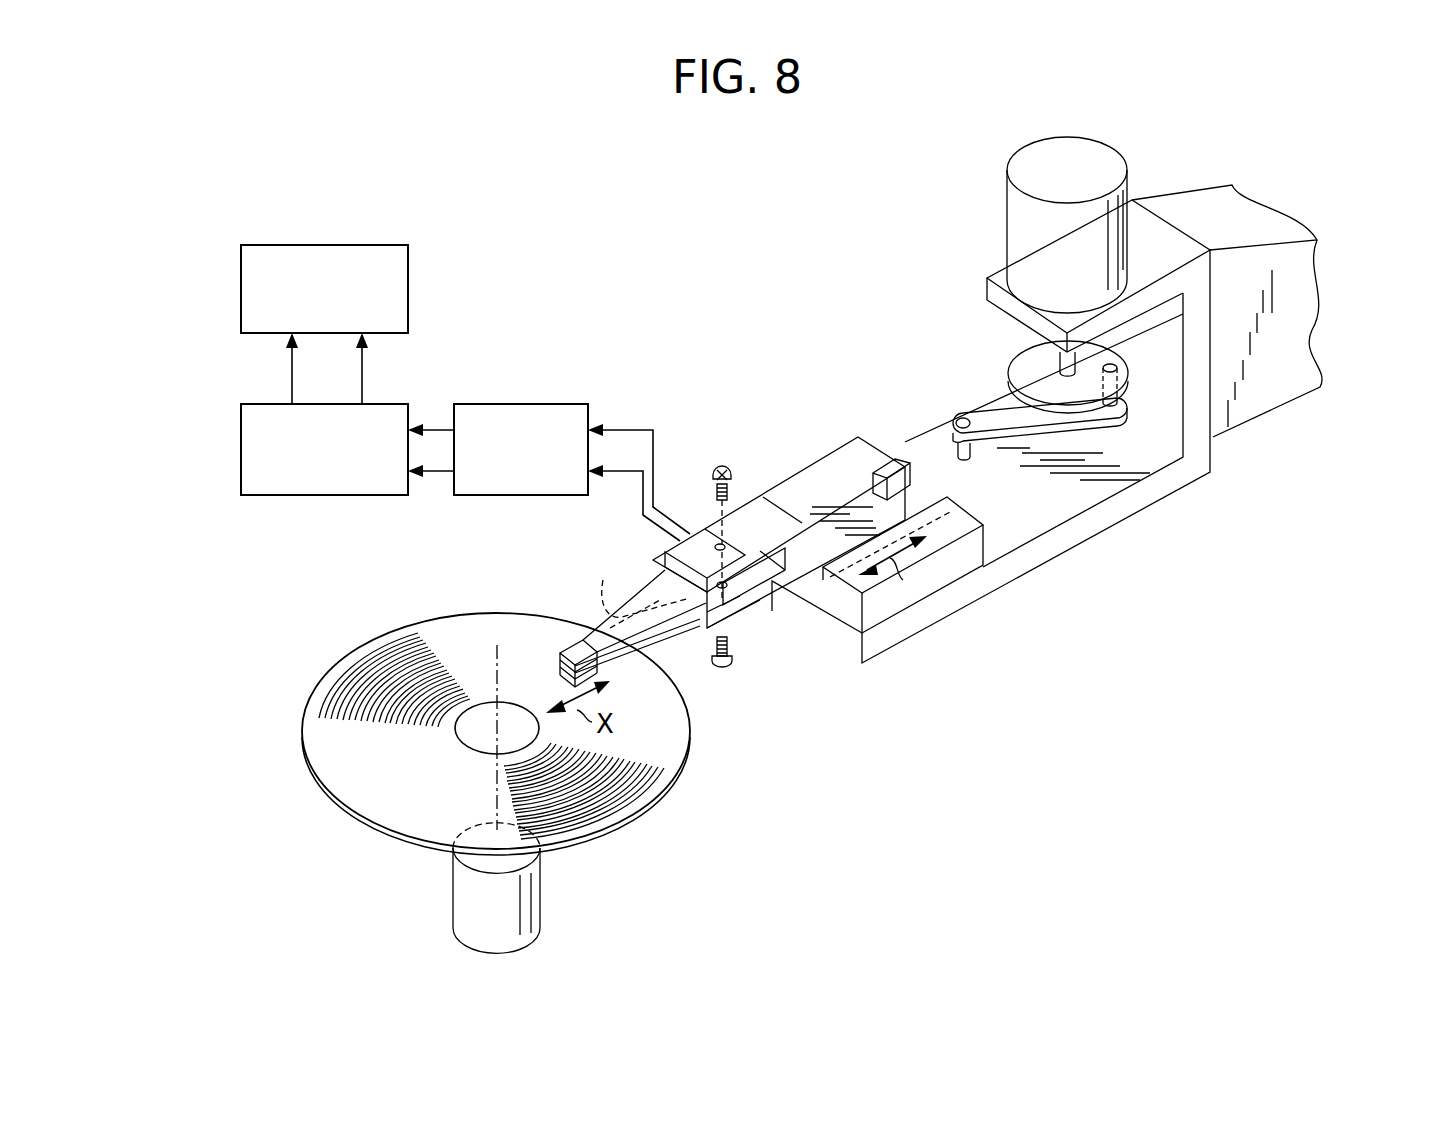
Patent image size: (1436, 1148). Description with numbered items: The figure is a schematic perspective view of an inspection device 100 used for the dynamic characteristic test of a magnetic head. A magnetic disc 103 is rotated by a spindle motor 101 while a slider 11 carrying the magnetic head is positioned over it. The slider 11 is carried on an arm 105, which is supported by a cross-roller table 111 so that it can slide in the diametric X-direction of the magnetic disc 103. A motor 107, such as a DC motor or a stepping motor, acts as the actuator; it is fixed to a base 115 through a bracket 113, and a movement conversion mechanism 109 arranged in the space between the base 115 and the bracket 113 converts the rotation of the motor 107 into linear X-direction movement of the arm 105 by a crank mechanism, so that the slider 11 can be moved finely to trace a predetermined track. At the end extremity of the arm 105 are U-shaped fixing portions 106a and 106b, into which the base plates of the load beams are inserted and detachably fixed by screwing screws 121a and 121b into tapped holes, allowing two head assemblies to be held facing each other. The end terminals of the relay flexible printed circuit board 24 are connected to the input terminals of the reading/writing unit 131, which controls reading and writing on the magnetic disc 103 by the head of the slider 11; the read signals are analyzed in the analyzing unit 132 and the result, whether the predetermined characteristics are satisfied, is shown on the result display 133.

The inspection device 100 is at (638, 300).
The spindle motor 101 is at (477, 903).
The magnetic disc 103 is at (353, 752).
The arm 105 is at (785, 624).
The fixing portion 106a is at (708, 537).
The fixing portion 106b is at (697, 622).
The motor 107 is at (1022, 218).
The movement conversion mechanism 109 is at (998, 359).
The cross-roller table 111 is at (958, 573).
The bracket 113 is at (990, 292).
The base 115 is at (1100, 522).
The screw 121a is at (724, 466).
The screw 121b is at (733, 663).
The reading/writing unit 131 is at (542, 404).
The analyzing unit 132 is at (383, 404).
The result display 133 is at (409, 263).
The slider 11 is at (556, 650).
The relay flexible printed circuit board 24 is at (639, 586).